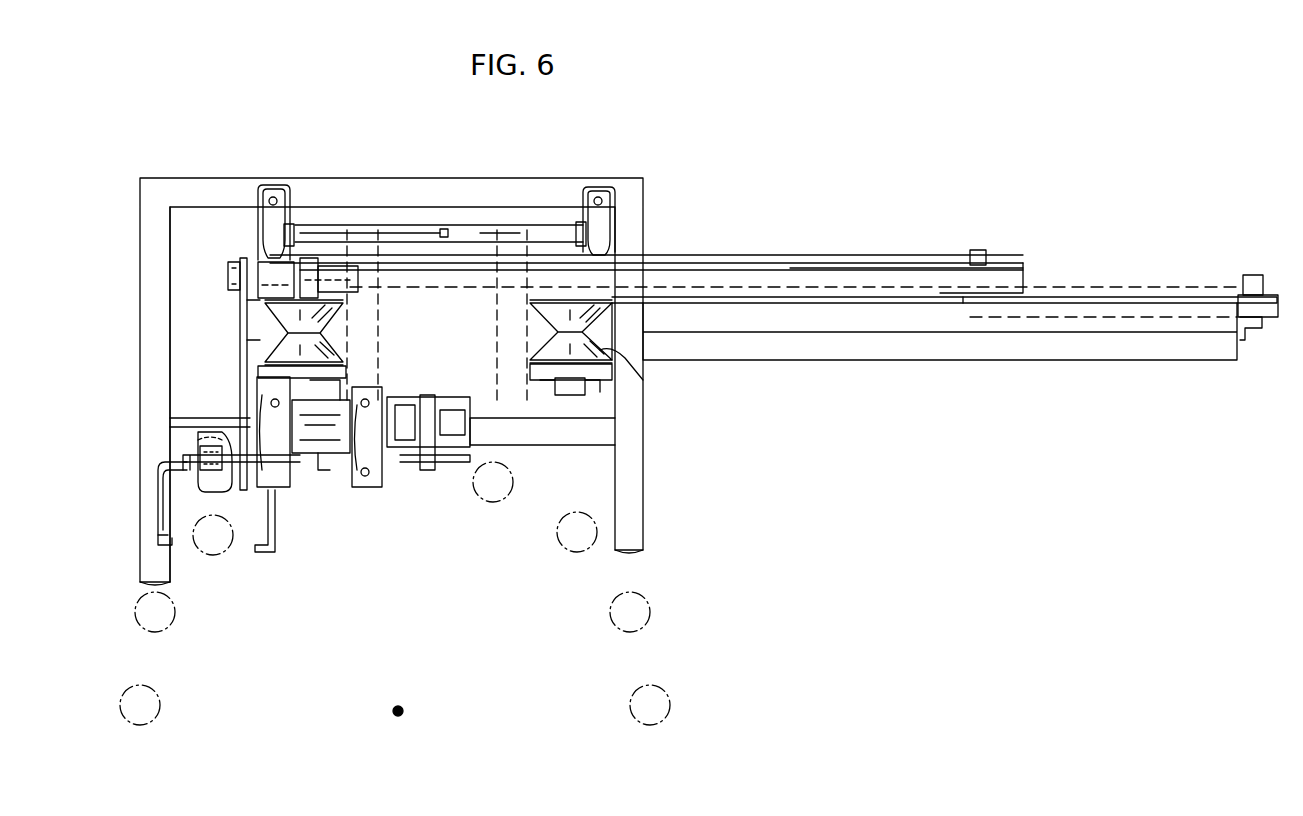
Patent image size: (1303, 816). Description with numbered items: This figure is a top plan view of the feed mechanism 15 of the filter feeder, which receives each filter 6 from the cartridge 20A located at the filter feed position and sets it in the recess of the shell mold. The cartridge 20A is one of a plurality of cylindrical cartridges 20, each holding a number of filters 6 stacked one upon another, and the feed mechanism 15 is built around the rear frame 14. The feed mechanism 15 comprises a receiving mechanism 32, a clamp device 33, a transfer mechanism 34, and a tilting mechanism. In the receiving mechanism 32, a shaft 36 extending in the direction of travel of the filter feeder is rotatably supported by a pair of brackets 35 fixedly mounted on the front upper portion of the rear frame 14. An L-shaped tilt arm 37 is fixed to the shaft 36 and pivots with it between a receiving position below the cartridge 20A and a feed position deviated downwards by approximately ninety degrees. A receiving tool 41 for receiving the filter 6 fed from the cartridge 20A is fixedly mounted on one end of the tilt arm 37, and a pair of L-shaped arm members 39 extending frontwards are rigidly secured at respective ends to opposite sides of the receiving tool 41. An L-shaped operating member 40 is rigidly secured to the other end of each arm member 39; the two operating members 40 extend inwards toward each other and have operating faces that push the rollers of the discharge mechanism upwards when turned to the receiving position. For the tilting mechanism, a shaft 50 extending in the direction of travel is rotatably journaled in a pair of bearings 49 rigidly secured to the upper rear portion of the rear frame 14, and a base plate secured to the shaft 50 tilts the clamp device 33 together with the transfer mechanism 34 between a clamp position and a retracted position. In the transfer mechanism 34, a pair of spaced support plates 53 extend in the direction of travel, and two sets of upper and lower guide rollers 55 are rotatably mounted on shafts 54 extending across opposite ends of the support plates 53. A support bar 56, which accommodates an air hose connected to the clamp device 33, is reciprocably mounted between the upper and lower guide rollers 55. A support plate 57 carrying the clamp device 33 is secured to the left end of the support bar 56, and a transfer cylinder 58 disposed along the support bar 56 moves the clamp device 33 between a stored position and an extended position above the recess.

The filter 6 is at (225, 465).
The rear frame 14 is at (545, 180).
The feed mechanism 15 is at (699, 180).
The cartridge 20 is at (652, 608).
The cartridge at filter feed position 20A is at (213, 555).
The receiving mechanism 32 is at (268, 553).
The clamp device 33 is at (211, 418).
The transfer mechanism 34 is at (705, 250).
The bracket 35 is at (286, 487).
The shaft 36 is at (300, 468).
The tilt arm 37 is at (198, 440).
The arm member 39 is at (158, 516).
The operating member 40 is at (160, 545).
The receiving tool 41 is at (185, 472).
The bearing 49 is at (280, 185).
The shaft 50 is at (458, 225).
The support plate 53 is at (420, 280).
The shaft 54 is at (580, 395).
The guide roller 55 is at (600, 355).
The support bar 56 is at (915, 358).
The support plate 57 is at (240, 308).
The transfer cylinder 58 is at (872, 252).